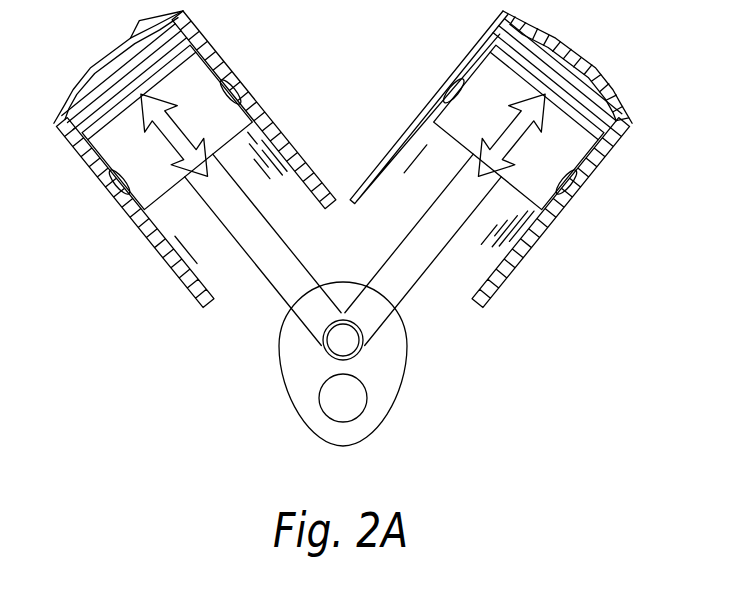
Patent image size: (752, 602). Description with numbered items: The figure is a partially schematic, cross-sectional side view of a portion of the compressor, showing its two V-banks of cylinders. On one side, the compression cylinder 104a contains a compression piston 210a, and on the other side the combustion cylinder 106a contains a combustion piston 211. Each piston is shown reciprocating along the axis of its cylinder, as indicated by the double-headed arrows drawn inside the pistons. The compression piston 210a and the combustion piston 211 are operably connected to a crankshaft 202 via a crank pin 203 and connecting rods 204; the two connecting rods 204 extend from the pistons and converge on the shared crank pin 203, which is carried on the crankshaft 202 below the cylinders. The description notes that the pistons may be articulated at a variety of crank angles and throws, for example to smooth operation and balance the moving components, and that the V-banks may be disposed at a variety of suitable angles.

The combustion cylinder 106a is at (118, 206).
The compression cylinder 104a is at (568, 206).
The combustion piston 211 is at (215, 113).
The compression piston 210a is at (470, 113).
The connecting rods 204 is at (293, 288).
The crank pin 203 is at (342, 341).
The crankshaft 202 is at (342, 397).